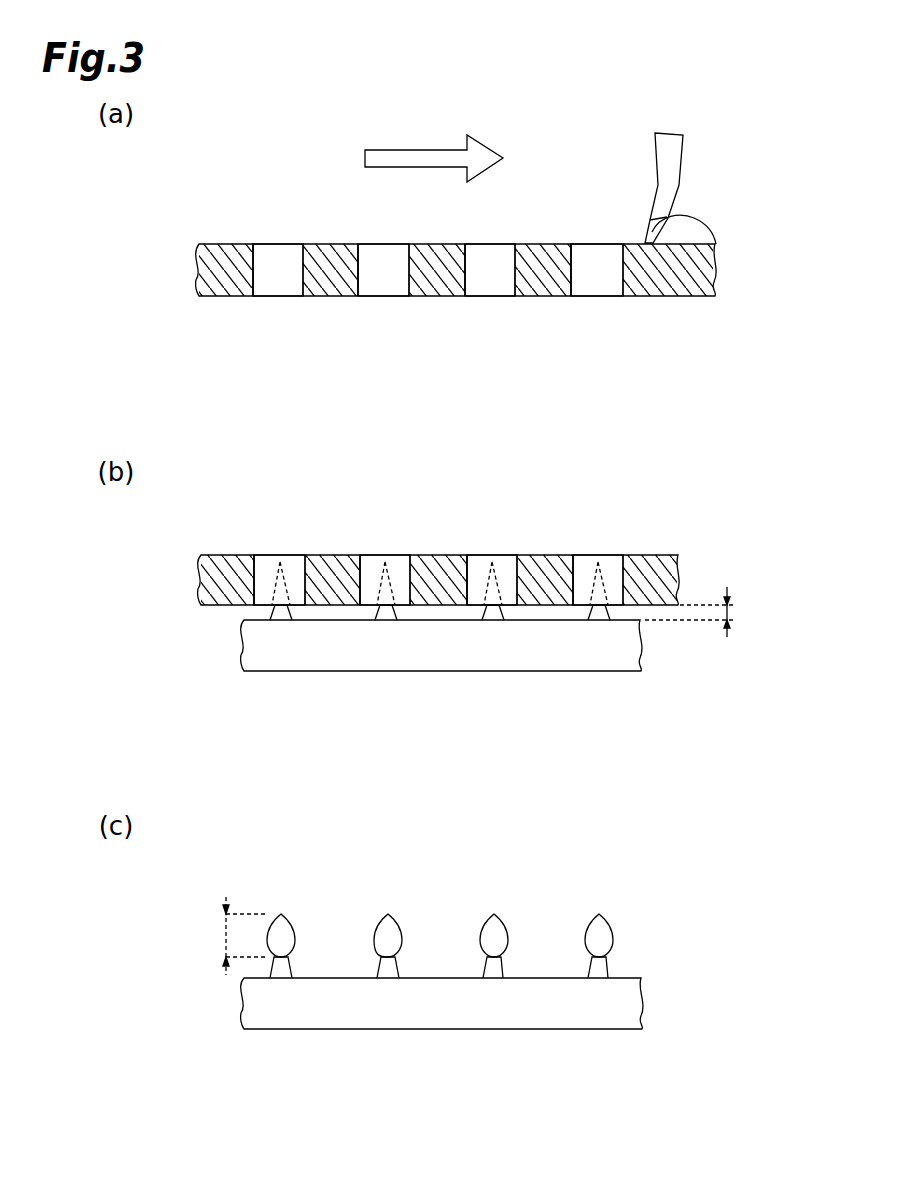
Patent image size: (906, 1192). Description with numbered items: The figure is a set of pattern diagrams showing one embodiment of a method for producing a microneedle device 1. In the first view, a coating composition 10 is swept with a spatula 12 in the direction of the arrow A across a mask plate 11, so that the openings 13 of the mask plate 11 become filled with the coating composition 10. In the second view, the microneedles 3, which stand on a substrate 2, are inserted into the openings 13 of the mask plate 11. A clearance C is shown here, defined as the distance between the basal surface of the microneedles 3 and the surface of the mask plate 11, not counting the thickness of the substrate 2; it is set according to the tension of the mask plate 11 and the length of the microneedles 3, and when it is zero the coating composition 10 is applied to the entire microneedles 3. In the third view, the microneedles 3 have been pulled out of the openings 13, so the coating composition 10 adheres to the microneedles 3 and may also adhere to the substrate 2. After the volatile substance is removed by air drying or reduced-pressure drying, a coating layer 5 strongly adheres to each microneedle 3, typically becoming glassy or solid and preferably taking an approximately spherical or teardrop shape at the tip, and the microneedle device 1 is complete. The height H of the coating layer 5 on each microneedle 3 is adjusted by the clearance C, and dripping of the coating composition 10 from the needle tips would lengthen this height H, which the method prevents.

The microneedle device 1 is at (582, 690).
The substrate 2 is at (634, 640).
The microneedles 3 is at (267, 615).
The coating layer 5 is at (594, 938).
The coating composition 10 is at (278, 284).
The mask plate 11 is at (231, 244).
The spatula 12 is at (651, 224).
The openings 13 is at (297, 256).
The direction of the arrow A is at (434, 147).
The clearance C is at (732, 612).
The height H is at (235, 936).